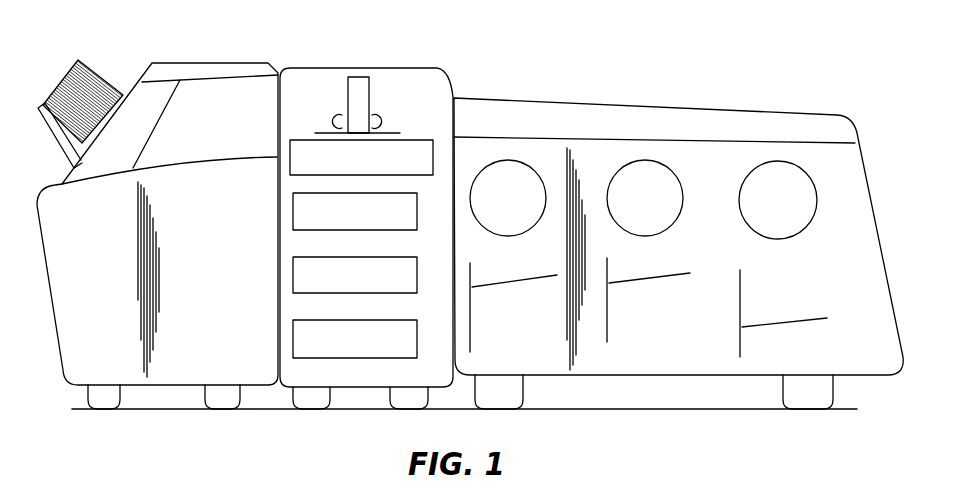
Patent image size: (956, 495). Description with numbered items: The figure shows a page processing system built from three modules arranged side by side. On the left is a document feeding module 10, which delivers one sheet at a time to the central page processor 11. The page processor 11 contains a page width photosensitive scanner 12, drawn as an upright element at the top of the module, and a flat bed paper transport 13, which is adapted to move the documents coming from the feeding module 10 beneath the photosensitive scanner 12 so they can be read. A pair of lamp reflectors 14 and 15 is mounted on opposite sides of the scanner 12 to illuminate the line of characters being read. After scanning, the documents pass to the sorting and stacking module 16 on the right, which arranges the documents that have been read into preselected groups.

The document feeding module 10 is at (162, 57).
The page processor 11 is at (383, 63).
The page width photosensitive scanner 12 is at (358, 77).
The flat bed paper transport 13 is at (305, 140).
The lamp reflector 14 is at (331, 116).
The lamp reflector 15 is at (383, 116).
The sorting and stacking module 16 is at (669, 103).